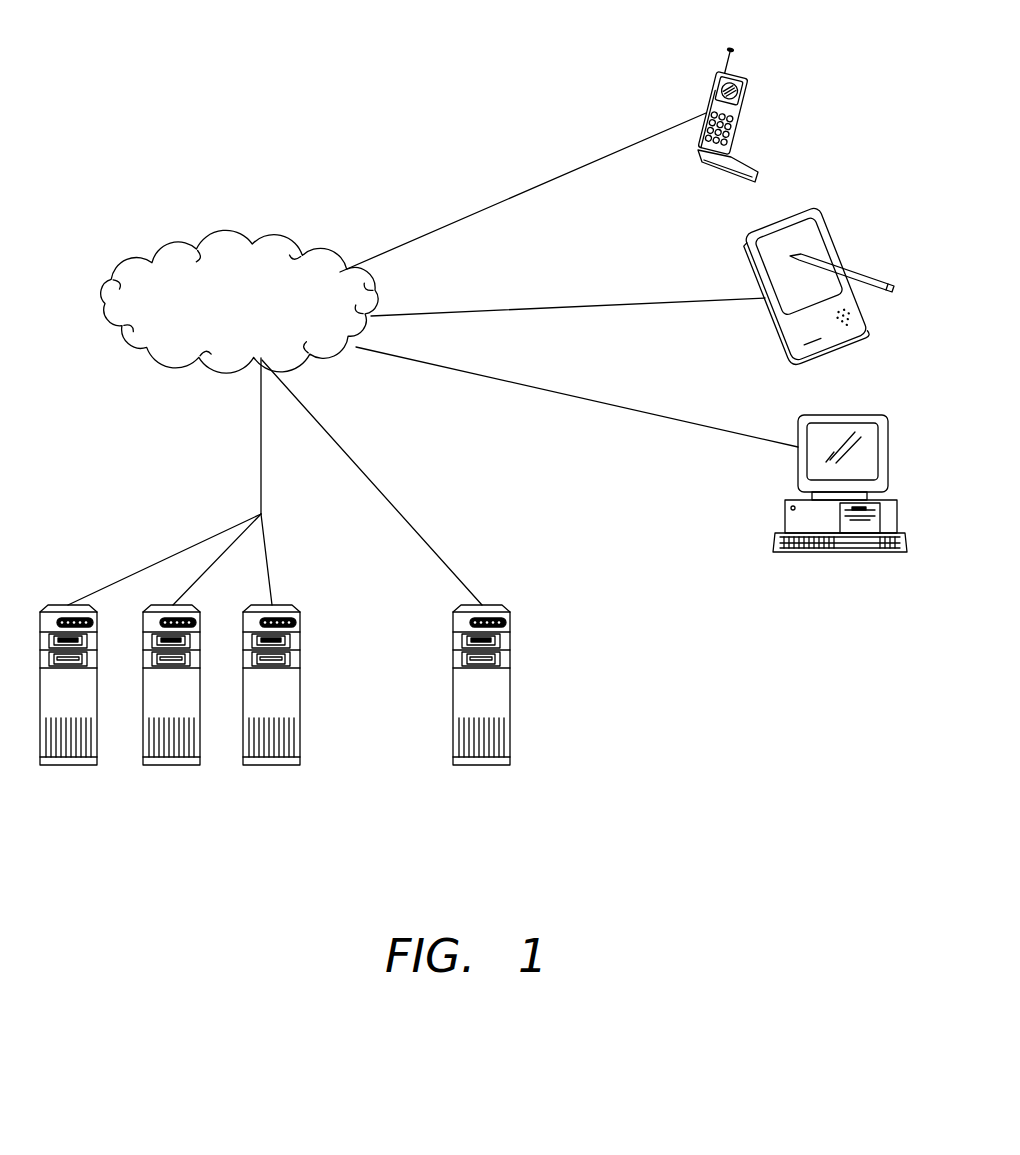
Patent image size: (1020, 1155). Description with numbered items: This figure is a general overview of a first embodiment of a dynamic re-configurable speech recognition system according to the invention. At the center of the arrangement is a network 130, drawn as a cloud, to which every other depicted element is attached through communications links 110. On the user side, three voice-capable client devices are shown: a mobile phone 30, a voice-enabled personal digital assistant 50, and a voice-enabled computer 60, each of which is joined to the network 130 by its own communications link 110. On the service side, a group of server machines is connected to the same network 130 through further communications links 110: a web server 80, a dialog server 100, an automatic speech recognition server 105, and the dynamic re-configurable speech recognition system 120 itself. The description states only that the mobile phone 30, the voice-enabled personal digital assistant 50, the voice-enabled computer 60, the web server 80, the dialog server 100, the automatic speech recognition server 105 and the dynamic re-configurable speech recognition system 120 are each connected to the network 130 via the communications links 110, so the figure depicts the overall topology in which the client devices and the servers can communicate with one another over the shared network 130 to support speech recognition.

The mobile phone 30 is at (751, 82).
The voice-enabled personal digital assistant 50 is at (844, 250).
The voice-enabled computer 60 is at (888, 447).
The web server 80 is at (513, 700).
The dialog server 100 is at (303, 692).
The automatic speech recognition server 105 is at (158, 766).
The communications links 110 is at (487, 208).
The dynamic re-configurable speech recognition system 120 is at (55, 766).
The network 130 is at (253, 243).